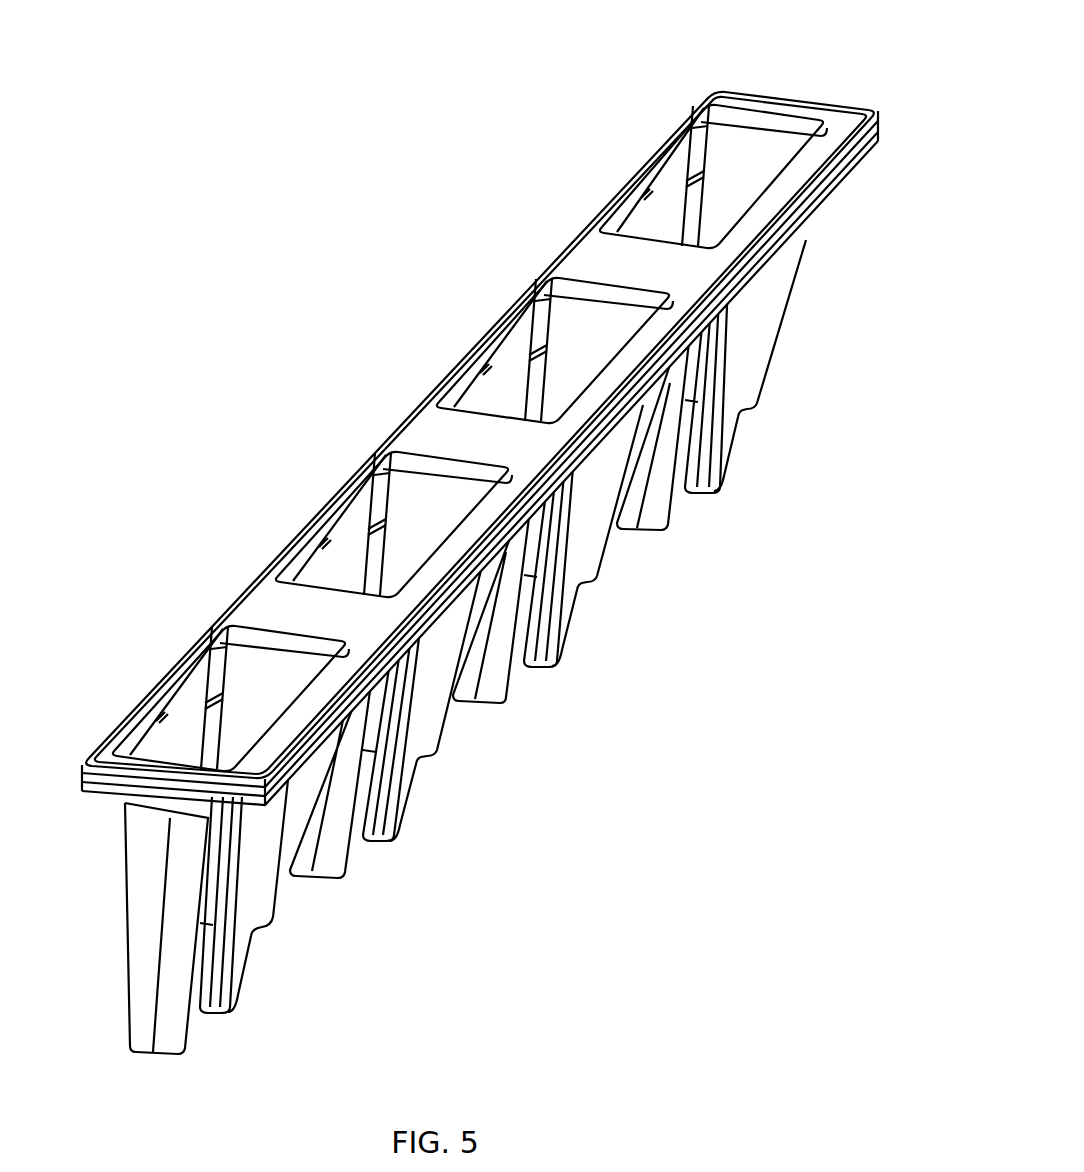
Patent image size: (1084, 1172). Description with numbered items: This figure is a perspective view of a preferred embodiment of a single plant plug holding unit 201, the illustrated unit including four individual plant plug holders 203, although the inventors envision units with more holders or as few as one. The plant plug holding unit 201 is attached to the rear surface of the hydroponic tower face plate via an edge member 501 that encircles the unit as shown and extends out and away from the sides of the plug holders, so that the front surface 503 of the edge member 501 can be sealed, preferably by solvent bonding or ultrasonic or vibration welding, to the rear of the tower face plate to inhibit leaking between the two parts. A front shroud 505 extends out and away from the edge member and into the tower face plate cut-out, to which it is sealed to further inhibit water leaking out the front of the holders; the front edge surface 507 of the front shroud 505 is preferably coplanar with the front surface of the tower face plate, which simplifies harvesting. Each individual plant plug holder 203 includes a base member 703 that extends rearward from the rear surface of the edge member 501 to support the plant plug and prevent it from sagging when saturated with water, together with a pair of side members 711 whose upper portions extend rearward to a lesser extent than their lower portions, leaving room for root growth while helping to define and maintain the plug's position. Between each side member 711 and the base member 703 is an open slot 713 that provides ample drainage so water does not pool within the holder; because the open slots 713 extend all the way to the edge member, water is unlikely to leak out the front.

The plant plug holding unit 201 is at (656, 748).
The individual plant plug holder 203 is at (727, 150).
The edge member 501 is at (870, 141).
The front surface of edge member 503 is at (861, 104).
The front shroud 505 is at (748, 287).
The front edge surface of front shroud 507 is at (586, 231).
The base member 703 is at (674, 522).
The side member 711 is at (723, 346).
The open slot 713 is at (195, 1025).